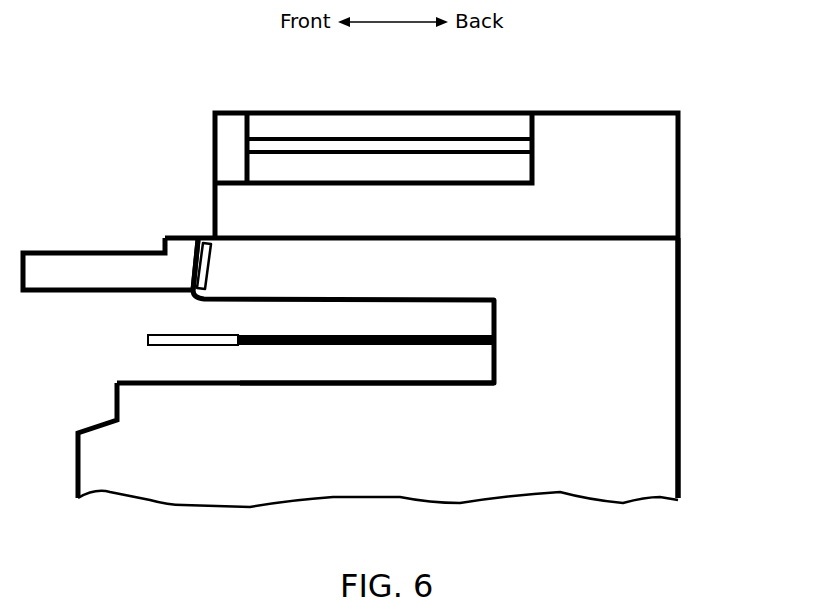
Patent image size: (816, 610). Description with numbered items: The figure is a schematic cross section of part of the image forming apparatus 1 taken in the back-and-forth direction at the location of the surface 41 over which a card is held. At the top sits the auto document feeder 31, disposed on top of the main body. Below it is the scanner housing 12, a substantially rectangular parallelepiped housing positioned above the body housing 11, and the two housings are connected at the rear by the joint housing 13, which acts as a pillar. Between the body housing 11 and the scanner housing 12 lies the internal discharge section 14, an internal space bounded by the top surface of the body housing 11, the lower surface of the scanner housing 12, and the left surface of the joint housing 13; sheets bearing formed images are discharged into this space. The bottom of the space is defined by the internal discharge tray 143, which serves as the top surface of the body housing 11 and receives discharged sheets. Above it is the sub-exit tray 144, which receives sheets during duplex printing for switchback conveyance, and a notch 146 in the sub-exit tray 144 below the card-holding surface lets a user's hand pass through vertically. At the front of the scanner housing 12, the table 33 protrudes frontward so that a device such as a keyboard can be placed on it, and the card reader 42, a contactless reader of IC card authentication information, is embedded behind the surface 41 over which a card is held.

The image forming apparatus 1 is at (704, 101).
The auto document feeder 31 is at (582, 113).
The scanner housing 12 is at (426, 258).
The joint housing 13 is at (640, 339).
The table 33 is at (70, 252).
The surface over which a card is held 41 is at (192, 262).
The card reader 42 is at (212, 264).
The internal discharge section 14 is at (124, 342).
The sub-exit tray 144 is at (418, 347).
The notch 146 is at (207, 347).
The internal discharge tray 143 is at (326, 382).
The body housing 11 is at (110, 460).